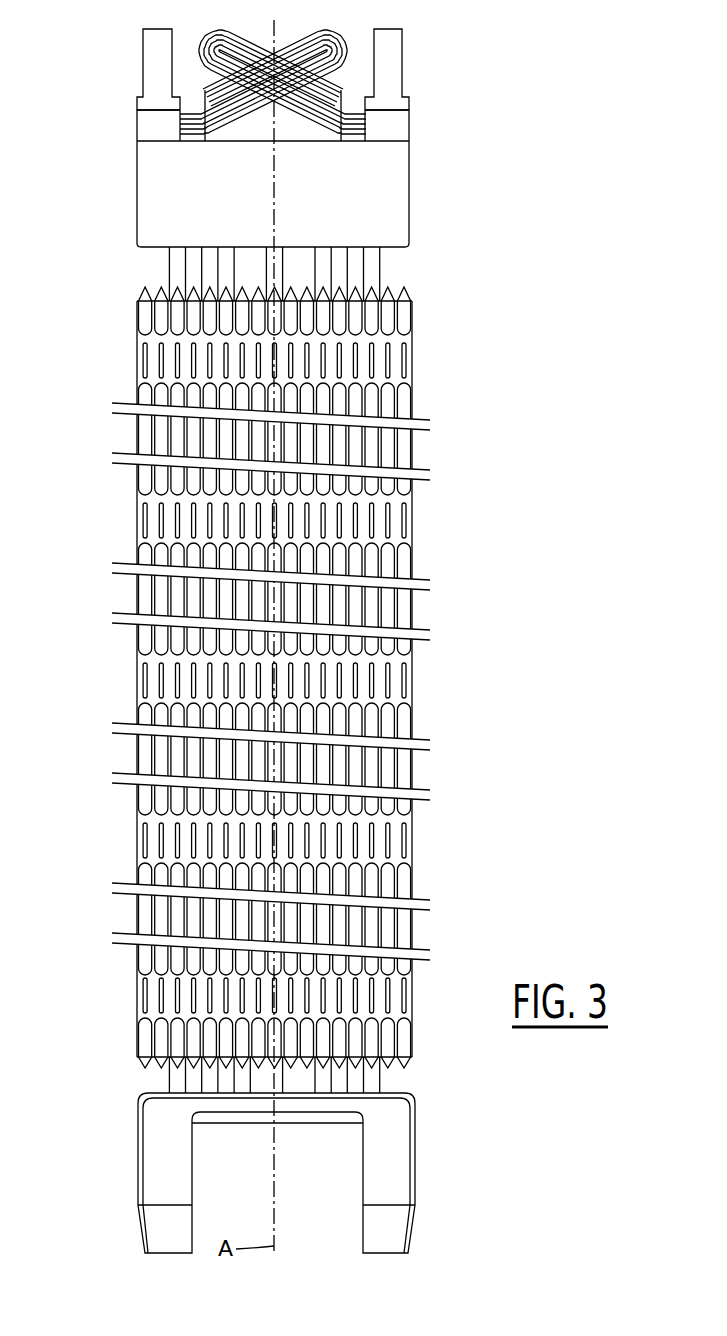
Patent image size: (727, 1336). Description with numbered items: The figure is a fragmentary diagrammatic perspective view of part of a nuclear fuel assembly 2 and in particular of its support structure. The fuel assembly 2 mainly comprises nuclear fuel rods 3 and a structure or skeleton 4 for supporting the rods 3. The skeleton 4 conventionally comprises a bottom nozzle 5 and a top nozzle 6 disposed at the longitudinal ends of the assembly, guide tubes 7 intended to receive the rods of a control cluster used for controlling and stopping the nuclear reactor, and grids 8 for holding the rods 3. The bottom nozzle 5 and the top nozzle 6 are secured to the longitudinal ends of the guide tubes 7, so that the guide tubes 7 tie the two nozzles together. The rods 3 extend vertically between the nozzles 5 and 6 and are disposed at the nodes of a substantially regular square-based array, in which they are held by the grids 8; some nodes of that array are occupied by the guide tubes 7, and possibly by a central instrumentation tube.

The fuel assembly 2 is at (307, 670).
The nuclear fuel rods 3 is at (400, 319).
The skeleton 4 is at (325, 138).
The bottom nozzle 5 is at (390, 1172).
The top nozzle 6 is at (394, 180).
The guide tubes 7 is at (201, 278).
The grids 8 is at (132, 519).